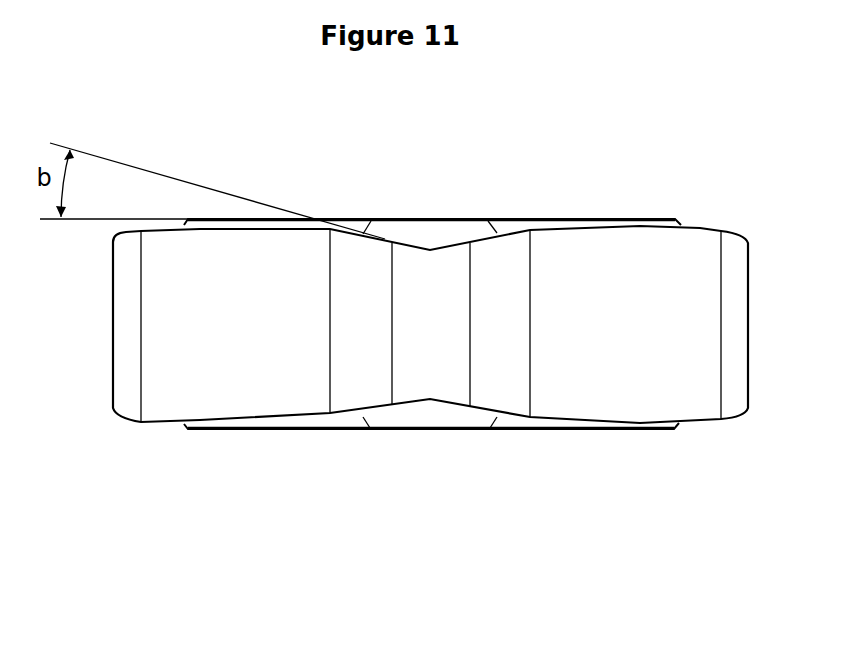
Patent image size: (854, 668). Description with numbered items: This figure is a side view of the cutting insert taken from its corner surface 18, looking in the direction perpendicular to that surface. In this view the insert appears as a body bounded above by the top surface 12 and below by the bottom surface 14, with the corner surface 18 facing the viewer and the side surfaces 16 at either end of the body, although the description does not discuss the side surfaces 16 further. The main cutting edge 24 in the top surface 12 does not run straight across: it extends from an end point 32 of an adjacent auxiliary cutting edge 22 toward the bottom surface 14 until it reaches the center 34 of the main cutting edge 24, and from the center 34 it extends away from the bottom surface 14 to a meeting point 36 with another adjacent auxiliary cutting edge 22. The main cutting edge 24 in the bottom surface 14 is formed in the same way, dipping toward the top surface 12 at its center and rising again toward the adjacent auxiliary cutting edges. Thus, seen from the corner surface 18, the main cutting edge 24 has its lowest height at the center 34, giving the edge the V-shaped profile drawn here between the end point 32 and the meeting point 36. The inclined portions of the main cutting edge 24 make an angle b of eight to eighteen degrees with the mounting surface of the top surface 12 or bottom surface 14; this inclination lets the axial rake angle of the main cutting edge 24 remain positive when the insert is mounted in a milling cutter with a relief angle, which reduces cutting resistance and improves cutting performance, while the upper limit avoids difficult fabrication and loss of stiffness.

The top surface 12 is at (484, 216).
The bottom surface 14 is at (496, 441).
The side face 16 is at (227, 396).
The corner surface 18 is at (423, 374).
The auxiliary cutting edge 22 is at (227, 216).
The main cutting edge 24 is at (383, 230).
The end point 32 is at (333, 228).
The center 34 is at (430, 248).
The second section boundary 36 is at (540, 228).